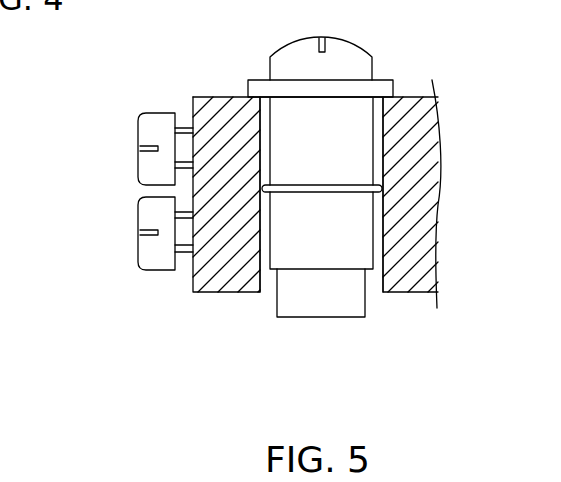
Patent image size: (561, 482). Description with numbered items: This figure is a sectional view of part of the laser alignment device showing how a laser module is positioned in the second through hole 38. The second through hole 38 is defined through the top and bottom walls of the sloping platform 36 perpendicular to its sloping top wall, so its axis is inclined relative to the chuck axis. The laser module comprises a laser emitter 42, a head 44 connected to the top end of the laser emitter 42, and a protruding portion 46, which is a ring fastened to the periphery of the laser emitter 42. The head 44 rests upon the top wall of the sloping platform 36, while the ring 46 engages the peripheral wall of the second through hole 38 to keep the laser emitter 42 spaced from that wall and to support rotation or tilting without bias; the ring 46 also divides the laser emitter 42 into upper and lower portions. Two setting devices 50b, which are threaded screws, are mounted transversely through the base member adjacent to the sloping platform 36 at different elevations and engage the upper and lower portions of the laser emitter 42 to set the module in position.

In FIG. 5, the sloping platform 36 is at (418, 185).
In FIG. 5, the second through hole 38 is at (272, 282).
In FIG. 5, the laser emitter 42 is at (333, 260).
In FIG. 4, the head 44 is at (8, 481).
In FIG. 5, the head 44 is at (357, 72).
In FIG. 5, the protruding portion 46 is at (355, 193).
In FIG. 5, the setting devices 50b is at (150, 168).